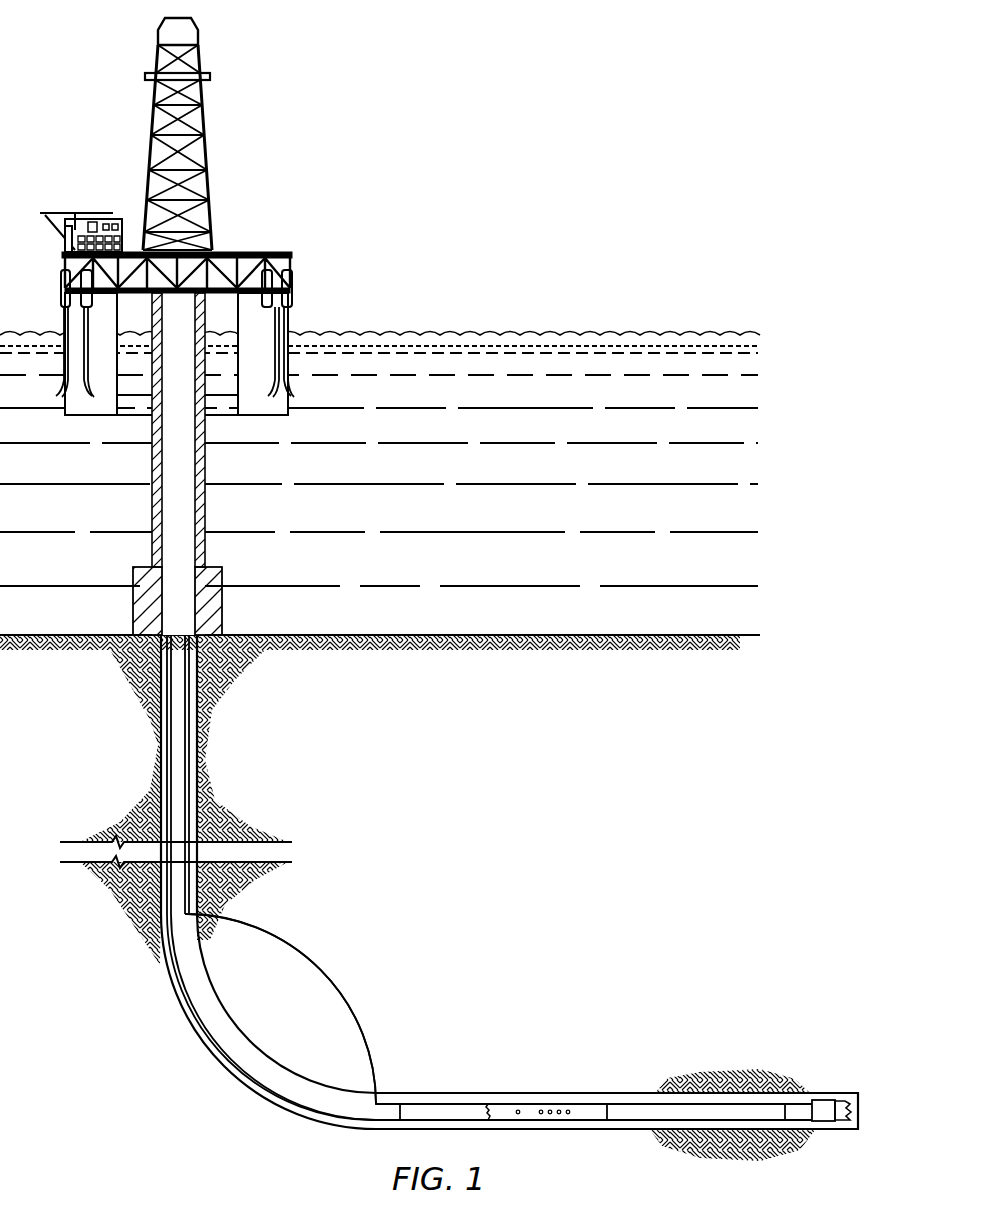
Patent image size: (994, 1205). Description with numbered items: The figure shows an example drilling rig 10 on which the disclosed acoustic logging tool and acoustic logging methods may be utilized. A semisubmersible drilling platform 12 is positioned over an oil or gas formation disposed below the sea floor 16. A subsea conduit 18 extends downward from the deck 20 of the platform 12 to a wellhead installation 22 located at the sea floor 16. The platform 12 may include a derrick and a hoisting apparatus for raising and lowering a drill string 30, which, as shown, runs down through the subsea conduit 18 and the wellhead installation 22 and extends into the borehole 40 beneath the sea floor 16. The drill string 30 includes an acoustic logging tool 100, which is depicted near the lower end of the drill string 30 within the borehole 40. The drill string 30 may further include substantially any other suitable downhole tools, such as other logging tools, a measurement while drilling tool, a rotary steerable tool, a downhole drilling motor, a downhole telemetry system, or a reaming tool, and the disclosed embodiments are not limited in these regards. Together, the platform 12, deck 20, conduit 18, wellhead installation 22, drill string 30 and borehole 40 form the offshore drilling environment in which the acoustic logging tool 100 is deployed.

The drilling rig 10 is at (292, 133).
The semisubmersible drilling platform 12 is at (280, 250).
The sea floor 16 is at (440, 634).
The subsea conduit 18 is at (205, 507).
The deck 20 is at (298, 292).
The wellhead installation 22 is at (221, 567).
The drill string 30 is at (177, 434).
The borehole 40 is at (159, 743).
The acoustic logging tool 100 is at (452, 1109).